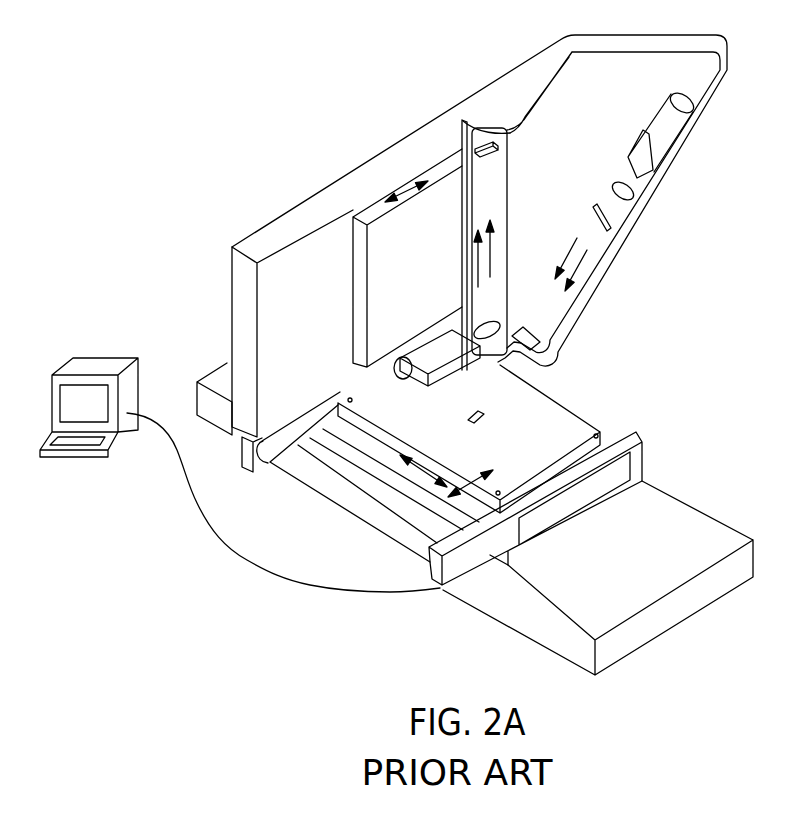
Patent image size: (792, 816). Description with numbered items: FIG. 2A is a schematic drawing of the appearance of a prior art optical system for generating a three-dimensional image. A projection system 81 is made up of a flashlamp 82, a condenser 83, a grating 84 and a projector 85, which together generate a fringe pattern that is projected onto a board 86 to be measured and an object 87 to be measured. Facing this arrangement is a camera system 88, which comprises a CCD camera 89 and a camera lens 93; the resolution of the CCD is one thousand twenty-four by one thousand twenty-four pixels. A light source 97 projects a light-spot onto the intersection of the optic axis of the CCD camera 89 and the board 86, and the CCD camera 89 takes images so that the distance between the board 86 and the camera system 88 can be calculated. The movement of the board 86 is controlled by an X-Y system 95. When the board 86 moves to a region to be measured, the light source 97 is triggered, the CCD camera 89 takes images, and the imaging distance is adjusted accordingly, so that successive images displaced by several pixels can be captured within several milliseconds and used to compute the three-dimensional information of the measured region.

The projection system 81 is at (646, 244).
The flashlamp 82 is at (684, 113).
The condenser 83 is at (612, 190).
The grating 84 is at (594, 209).
The projector 85 is at (528, 332).
The board to be measured 86 is at (581, 418).
The object to be measured 87 is at (481, 424).
The camera system 88 is at (447, 128).
The CCD camera 89 is at (487, 147).
The camera lens 93 is at (491, 356).
The X-Y system 95 is at (69, 457).
The light source 97 is at (402, 360).